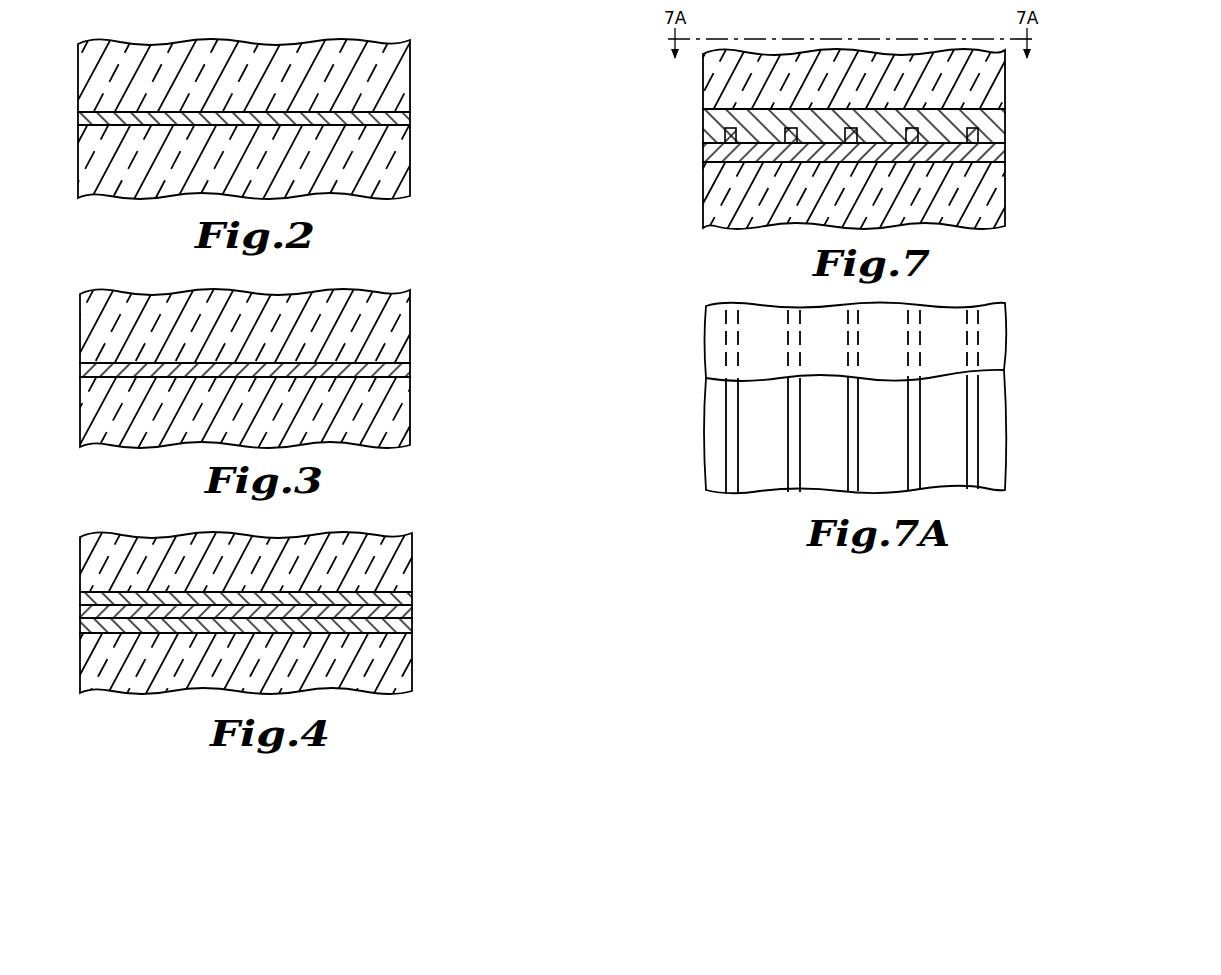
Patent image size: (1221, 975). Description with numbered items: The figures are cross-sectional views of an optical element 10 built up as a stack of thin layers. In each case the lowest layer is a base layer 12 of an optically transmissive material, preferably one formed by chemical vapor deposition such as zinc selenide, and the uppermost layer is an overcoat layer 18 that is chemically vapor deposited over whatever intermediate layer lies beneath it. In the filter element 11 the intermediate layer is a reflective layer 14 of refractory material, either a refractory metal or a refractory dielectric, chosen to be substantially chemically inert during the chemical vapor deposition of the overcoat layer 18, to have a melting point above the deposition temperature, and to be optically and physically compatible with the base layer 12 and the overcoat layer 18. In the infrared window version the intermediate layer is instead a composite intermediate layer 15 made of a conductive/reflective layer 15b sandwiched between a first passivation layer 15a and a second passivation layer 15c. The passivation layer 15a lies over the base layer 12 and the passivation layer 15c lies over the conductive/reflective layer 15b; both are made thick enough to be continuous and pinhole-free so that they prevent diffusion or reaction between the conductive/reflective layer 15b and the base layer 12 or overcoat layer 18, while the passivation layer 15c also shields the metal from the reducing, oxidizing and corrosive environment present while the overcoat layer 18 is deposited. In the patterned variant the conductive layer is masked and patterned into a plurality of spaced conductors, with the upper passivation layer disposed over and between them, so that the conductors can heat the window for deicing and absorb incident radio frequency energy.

In FIG. 2, the optical element 10 is at (70, 92).
In FIG. 3, the optical element 10 is at (72, 322).
In FIG. 4, the optical element 10 is at (70, 580).
In FIG. 2, the filter element 11 is at (166, 40).
In FIG. 3, the filter element 11 is at (165, 296).
In FIG. 4, the filter element 11 is at (160, 534).
In FIG. 2, the base layer 12 is at (411, 165).
In FIG. 3, the base layer 12 is at (411, 420).
In FIG. 4, the base layer 12 is at (413, 672).
In FIG. 7, the base layer 12 is at (1006, 210).
In FIG. 2, the reflective layer 14 is at (411, 118).
In FIG. 3, the reflective layer 14 is at (411, 369).
In FIG. 4, the composite intermediate layer 15 is at (812, 568).
In FIG. 4, the passivation layer 15a is at (413, 626).
In FIG. 7, the passivation layer 15a is at (1006, 152).
In FIG. 4, the conductive/reflective layer 15b is at (413, 612).
In FIG. 7, the conductive/reflective layer 15b is at (978, 140).
In FIG. 7A, the conductive/reflective layer 15b is at (975, 490).
In FIG. 4, the passivation layer 15c is at (413, 598).
In FIG. 7, the passivation layer 15c is at (1006, 114).
In FIG. 7A, the passivation layer 15c is at (990, 418).
In FIG. 2, the overcoat layer 18 is at (411, 50).
In FIG. 3, the overcoat layer 18 is at (411, 302).
In FIG. 4, the overcoat layer 18 is at (413, 540).
In FIG. 7, the overcoat layer 18 is at (1006, 96).
In FIG. 7A, the overcoat layer 18 is at (952, 346).